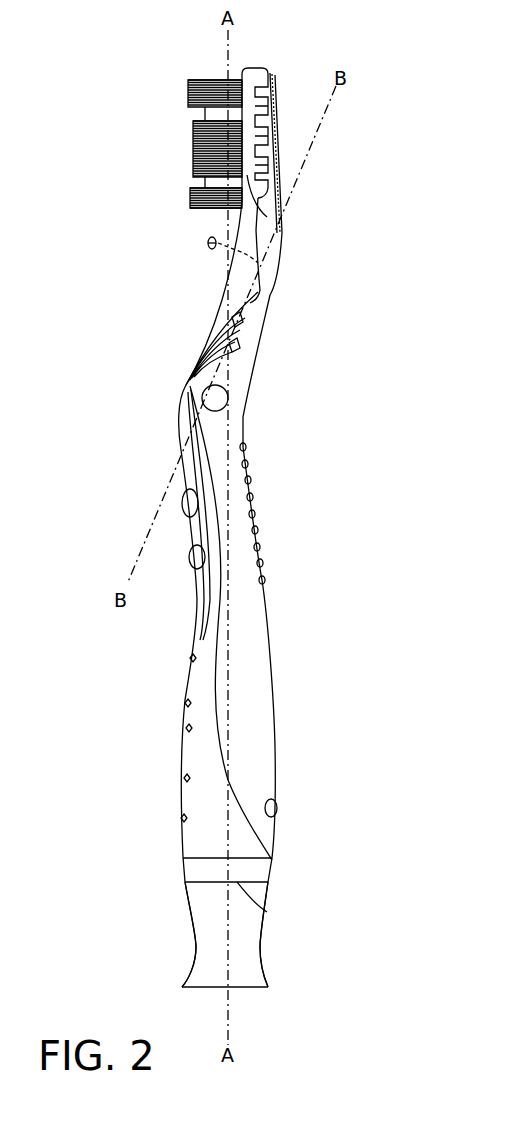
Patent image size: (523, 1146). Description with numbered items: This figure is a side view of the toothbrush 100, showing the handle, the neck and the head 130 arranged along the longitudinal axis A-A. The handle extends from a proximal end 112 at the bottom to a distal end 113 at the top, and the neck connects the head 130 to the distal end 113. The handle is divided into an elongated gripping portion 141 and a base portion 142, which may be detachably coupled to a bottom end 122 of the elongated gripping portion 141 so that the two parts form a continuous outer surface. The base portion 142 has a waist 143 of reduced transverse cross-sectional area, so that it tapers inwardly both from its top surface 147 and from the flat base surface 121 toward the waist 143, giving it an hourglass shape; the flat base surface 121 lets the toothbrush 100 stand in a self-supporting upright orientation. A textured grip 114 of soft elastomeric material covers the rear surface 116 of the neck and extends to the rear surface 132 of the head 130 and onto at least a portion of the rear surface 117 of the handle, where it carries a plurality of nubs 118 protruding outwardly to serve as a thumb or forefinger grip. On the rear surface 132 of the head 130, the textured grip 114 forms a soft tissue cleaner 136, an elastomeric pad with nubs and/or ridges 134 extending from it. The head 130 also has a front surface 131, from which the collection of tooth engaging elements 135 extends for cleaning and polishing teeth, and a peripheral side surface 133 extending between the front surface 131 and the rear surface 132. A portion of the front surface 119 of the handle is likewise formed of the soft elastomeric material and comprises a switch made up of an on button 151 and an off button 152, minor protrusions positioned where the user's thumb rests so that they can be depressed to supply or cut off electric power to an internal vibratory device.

The toothbrush 100 is at (120, 126).
The proximal end 112 is at (262, 990).
The distal end 113 is at (195, 403).
The textured grip 114 is at (233, 344).
The rear surface of the neck 116 is at (265, 298).
The rear surface of the handle 117 is at (255, 623).
The nubs 118 is at (248, 473).
The front surface of the handle 119 is at (188, 438).
The flat base surface 121 is at (238, 988).
The bottom end 122 is at (267, 912).
The head 130 is at (260, 68).
The front surface of the head 131 is at (207, 180).
The rear surface of the head 132 is at (272, 76).
The peripheral side surface 133 is at (267, 217).
The nubs and/or ridges 134 is at (278, 150).
The tooth engaging elements 135 is at (203, 62).
The soft tissue cleaner 136 is at (292, 124).
The elongated gripping portion 141 is at (172, 687).
The base portion 142 is at (174, 908).
The waist 143 is at (193, 922).
The top surface 147 is at (251, 882).
The on button 151 is at (193, 500).
The off button 152 is at (197, 560).